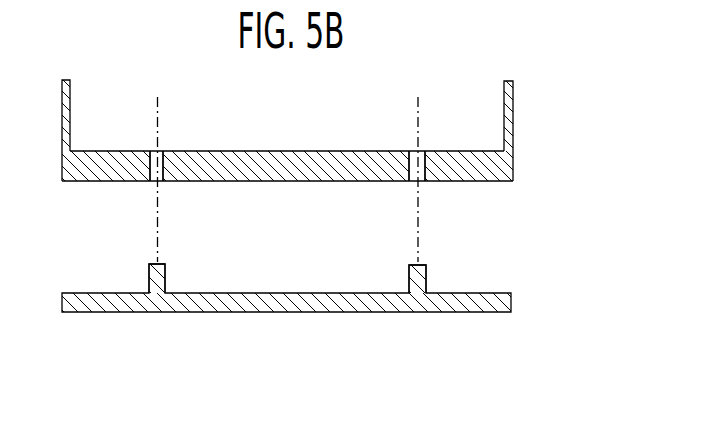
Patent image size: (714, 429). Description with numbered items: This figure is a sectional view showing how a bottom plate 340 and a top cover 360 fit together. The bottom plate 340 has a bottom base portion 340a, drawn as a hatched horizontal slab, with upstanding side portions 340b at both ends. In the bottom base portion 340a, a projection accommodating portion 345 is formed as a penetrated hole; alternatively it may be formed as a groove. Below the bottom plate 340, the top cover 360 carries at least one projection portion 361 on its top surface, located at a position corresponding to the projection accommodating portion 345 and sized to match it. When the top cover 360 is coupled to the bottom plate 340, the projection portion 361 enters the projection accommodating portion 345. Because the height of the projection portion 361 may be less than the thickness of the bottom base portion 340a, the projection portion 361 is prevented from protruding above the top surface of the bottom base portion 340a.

The bottom plate 340 is at (354, 138).
The bottom base portion 340a is at (484, 172).
The side wall of upper member 340b is at (513, 125).
The projection accommodating portion 345 is at (162, 163).
The top cover 360 is at (524, 283).
The projection portion 361 is at (408, 275).